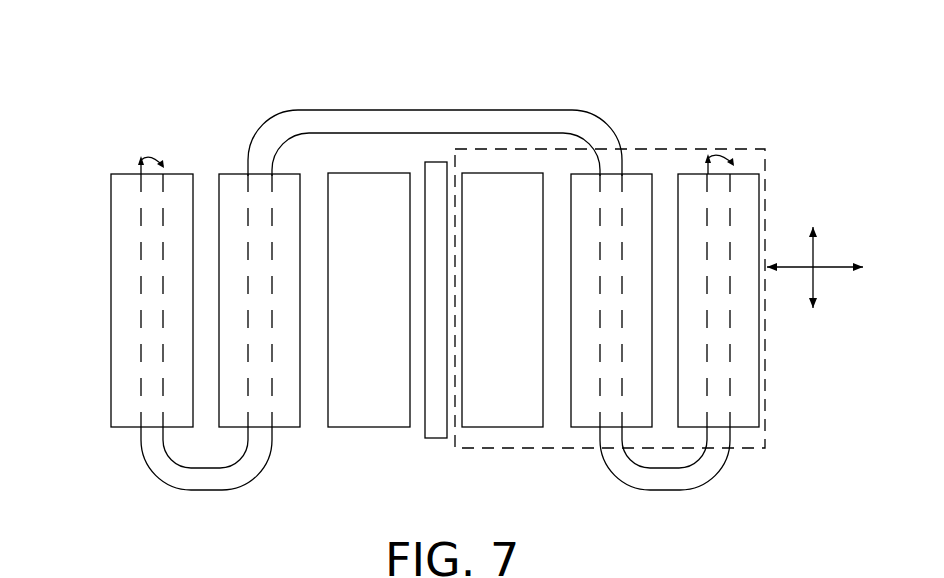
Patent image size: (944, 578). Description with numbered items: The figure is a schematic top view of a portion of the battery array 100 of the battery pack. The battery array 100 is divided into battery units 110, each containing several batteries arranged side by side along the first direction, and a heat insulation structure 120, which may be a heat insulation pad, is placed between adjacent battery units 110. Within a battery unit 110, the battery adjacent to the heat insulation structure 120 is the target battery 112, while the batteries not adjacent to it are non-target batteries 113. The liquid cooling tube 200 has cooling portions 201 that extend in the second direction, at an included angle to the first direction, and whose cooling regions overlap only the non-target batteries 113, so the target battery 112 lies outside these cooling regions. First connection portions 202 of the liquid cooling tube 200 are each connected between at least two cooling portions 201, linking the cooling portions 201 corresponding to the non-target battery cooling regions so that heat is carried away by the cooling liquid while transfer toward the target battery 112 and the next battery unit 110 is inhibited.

The battery array 100 is at (95, 88).
The battery unit 110 is at (728, 146).
The target battery 112 is at (372, 428).
The non-target battery 113 is at (244, 192).
The heat insulation structure 120 is at (437, 440).
The liquid cooling tube 200 is at (360, 8).
The cooling portion 201 is at (141, 255).
The first connection portion 202 is at (197, 490).